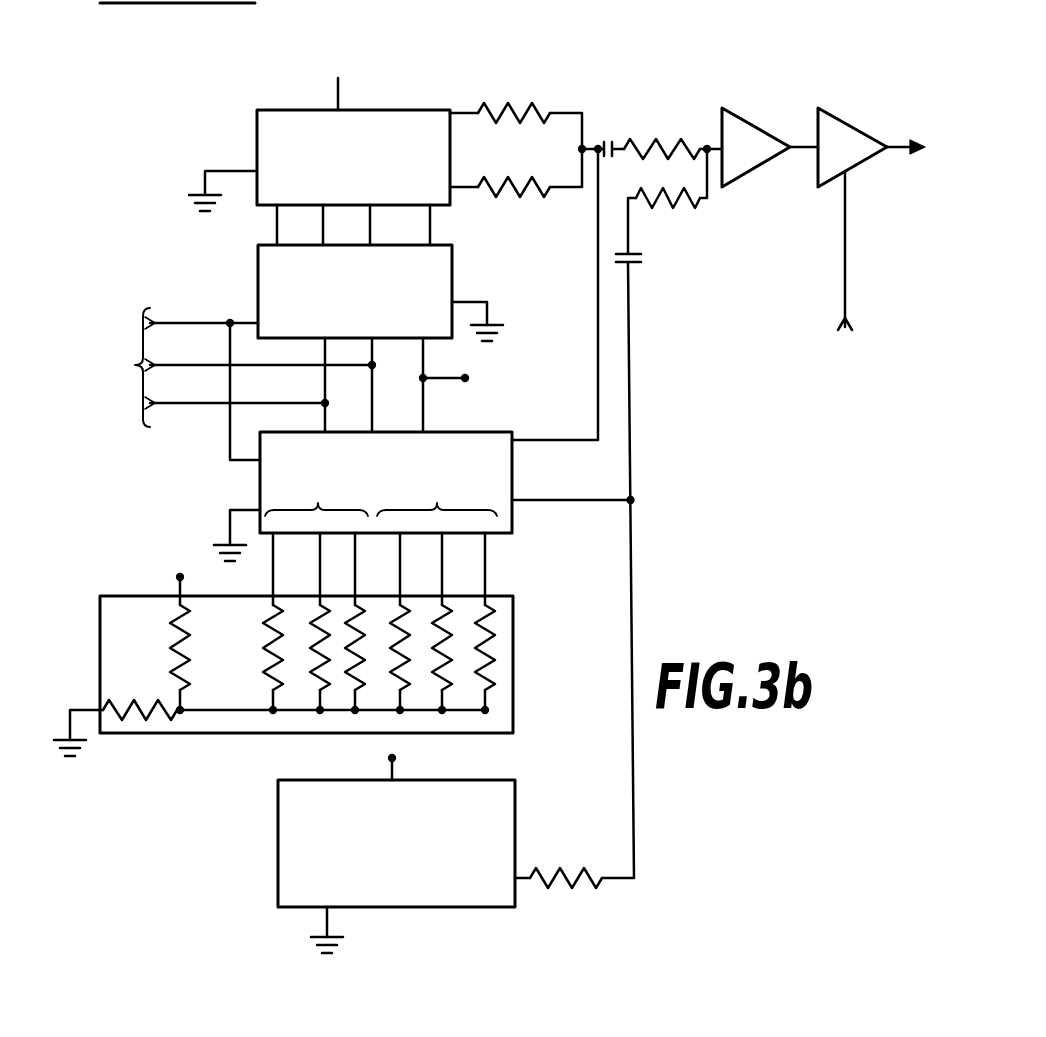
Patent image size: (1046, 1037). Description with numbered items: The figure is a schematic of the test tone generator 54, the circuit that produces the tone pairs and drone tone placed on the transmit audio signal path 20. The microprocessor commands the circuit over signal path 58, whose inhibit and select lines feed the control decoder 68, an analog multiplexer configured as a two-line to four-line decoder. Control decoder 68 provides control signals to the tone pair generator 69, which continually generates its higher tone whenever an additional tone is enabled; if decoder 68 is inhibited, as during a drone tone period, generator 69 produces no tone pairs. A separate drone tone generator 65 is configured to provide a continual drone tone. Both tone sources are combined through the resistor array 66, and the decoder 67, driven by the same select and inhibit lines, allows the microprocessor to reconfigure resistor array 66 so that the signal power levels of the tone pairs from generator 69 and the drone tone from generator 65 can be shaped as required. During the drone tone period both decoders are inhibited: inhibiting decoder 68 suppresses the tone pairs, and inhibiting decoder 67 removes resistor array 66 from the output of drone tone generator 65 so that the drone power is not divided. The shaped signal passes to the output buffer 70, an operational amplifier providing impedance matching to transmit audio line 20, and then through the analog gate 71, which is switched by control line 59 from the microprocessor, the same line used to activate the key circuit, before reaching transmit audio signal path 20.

The test tone generator 54 is at (440, 56).
The tone pair generator 69 is at (395, 110).
The control decoder 68 is at (452, 262).
The decoder 67 is at (512, 455).
The resistor array 66 is at (513, 617).
The drone tone generator 65 is at (278, 805).
The output buffer 70 is at (744, 177).
The analog gate 71 is at (853, 165).
The transmit audio signal path 20 is at (900, 146).
The signal path 59 is at (845, 260).
The signal path 58 is at (233, 326).